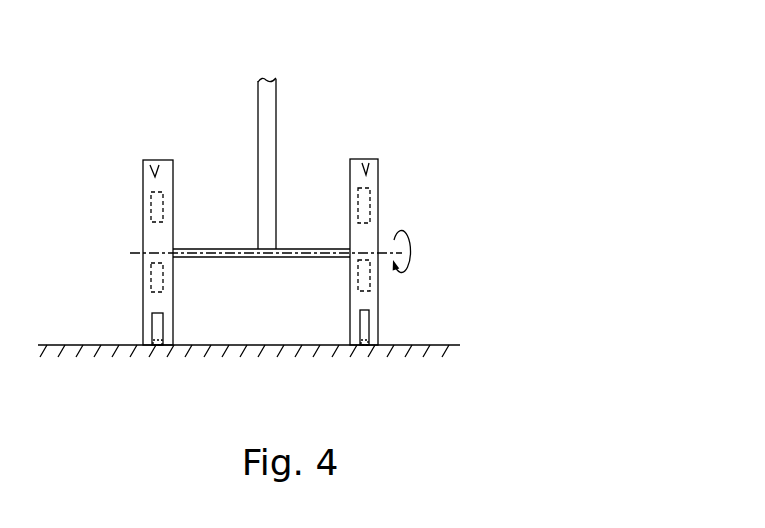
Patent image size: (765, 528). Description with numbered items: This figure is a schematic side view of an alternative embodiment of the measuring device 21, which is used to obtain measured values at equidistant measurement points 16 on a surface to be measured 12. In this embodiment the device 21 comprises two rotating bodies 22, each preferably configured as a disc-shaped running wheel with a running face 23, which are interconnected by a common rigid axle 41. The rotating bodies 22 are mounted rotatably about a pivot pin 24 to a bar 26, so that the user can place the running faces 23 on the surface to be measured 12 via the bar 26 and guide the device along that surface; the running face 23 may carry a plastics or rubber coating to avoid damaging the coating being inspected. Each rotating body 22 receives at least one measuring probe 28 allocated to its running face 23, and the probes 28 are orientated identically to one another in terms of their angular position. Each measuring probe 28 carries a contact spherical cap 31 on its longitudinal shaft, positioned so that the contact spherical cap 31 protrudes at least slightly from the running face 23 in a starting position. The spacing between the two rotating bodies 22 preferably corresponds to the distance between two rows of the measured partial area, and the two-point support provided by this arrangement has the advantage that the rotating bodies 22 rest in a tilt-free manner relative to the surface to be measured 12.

The surface to be measured 12 is at (254, 343).
The equidistant measurement points 16 is at (163, 368).
The device 21 is at (377, 103).
The rotating body 22 is at (122, 197).
The running face 23 is at (148, 165).
The pivot pin 24 is at (143, 253).
The bar 26 is at (267, 117).
The measuring probe 28 is at (134, 326).
The contact spherical cap 31 is at (157, 346).
The common rigid axle 41 is at (212, 248).